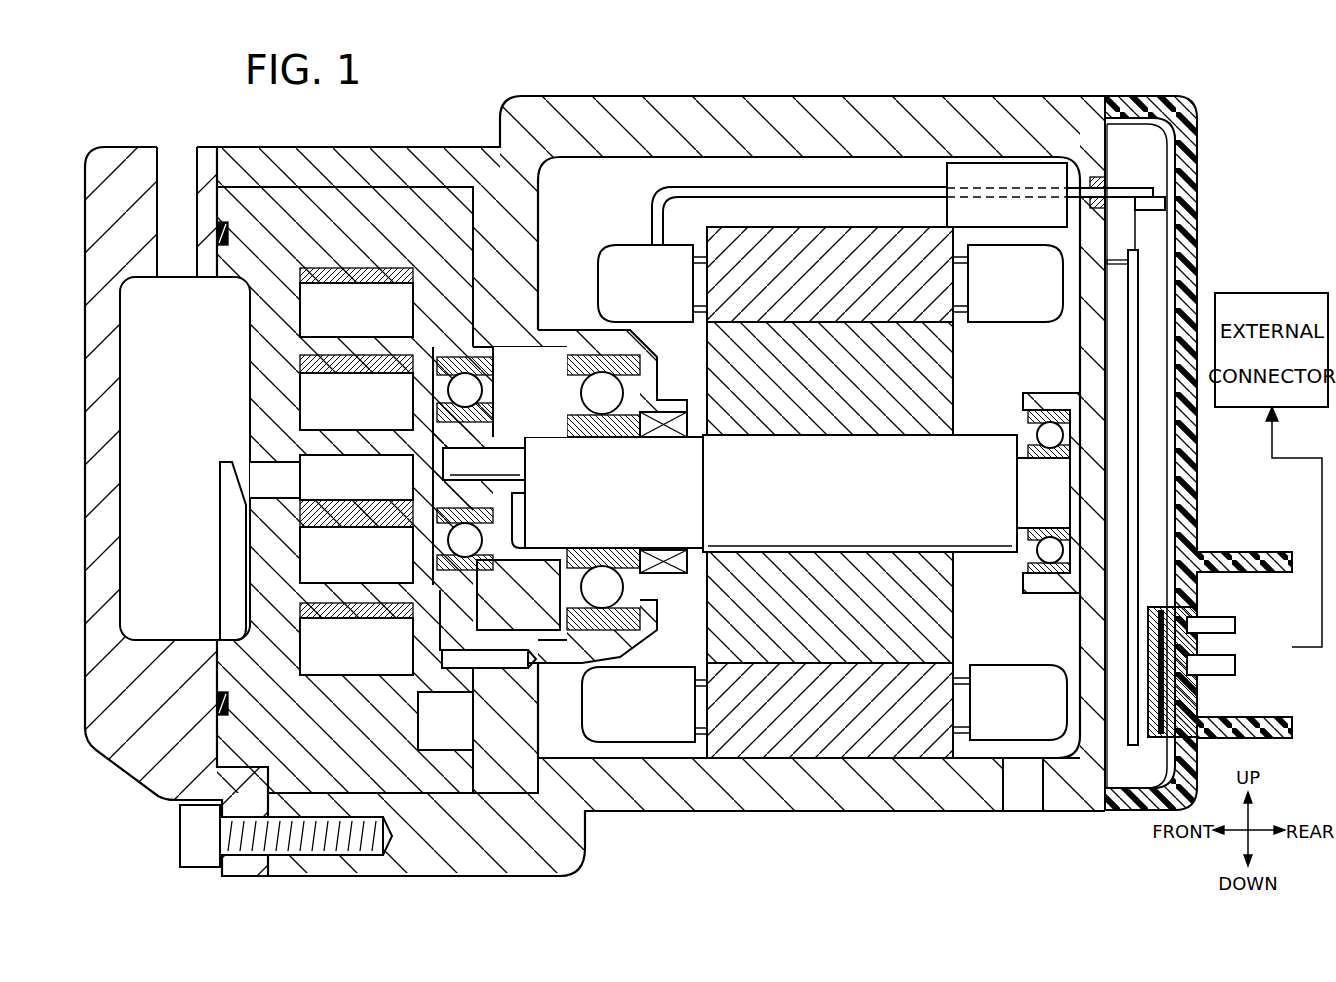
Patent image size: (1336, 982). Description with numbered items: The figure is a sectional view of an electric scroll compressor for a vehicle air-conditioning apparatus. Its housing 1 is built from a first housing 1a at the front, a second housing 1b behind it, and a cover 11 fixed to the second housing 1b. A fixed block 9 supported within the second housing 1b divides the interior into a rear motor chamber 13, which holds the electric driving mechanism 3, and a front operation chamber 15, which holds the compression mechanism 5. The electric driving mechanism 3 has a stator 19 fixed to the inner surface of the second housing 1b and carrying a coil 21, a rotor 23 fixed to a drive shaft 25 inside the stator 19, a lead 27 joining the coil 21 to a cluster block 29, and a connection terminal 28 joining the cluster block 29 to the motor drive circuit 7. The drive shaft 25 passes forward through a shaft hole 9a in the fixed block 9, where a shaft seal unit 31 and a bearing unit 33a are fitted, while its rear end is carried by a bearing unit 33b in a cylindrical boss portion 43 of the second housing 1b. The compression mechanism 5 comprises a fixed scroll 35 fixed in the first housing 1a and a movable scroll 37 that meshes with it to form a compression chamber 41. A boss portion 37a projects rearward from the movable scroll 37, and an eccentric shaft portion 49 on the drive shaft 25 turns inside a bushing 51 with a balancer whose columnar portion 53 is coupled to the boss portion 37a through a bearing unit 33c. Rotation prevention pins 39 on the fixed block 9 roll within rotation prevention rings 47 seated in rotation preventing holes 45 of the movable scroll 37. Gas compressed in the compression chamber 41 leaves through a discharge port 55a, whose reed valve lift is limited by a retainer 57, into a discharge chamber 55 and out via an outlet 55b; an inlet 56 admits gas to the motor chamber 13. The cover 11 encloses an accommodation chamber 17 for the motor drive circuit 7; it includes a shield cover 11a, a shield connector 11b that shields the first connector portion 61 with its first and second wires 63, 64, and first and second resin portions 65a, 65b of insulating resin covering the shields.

The housing 1 is at (130, 133).
The first housing 1a is at (155, 765).
The second housing 1b is at (722, 122).
The electric driving mechanism 3 is at (818, 180).
The compression mechanism 5 is at (392, 252).
The motor drive circuit 7 is at (1134, 365).
The fixed block 9 is at (490, 218).
The shaft hole 9a is at (690, 553).
The cover 11 is at (1199, 510).
The shield cover 11a is at (1177, 187).
The shield connector 11b is at (1262, 718).
The motor chamber 13 is at (976, 617).
The operation chamber 15 is at (515, 399).
The accommodation chamber 17 is at (1141, 494).
The stator 19 is at (840, 735).
The coil 21 is at (1027, 293).
The rotor 23 is at (935, 377).
The drive shaft 25 is at (816, 494).
The lead 27 is at (663, 215).
The connection terminal 28 is at (1135, 192).
The cluster block 29 is at (1002, 172).
The shaft seal unit 31 is at (665, 405).
The bearing unit 33a is at (598, 388).
The bearing unit 33b is at (1050, 430).
The bearing unit 33c is at (470, 545).
The fixed scroll 35 is at (270, 348).
The movable scroll 37 is at (418, 375).
The boss portion 37a is at (447, 343).
The rotation prevention pin 39 is at (457, 670).
The compression chamber 41 is at (343, 494).
The boss portion 43 is at (1052, 590).
The rotation preventing hole 45 is at (447, 637).
The rotation prevention ring 47 is at (432, 576).
The eccentric shaft portion 49 is at (513, 462).
The bushing with a balancer 51 is at (527, 605).
The columnar portion 53 is at (473, 495).
The discharge chamber 55 is at (156, 318).
The discharge port 55a is at (277, 496).
The outlet 55b is at (190, 165).
The inlet 56 is at (1012, 778).
The retainer 57 is at (233, 529).
The first connector portion 61 is at (1266, 546).
The first wire 63 is at (1242, 624).
The second wire 64 is at (1242, 664).
The first resin portion 65a is at (1158, 738).
The second resin portion 65b is at (1190, 241).